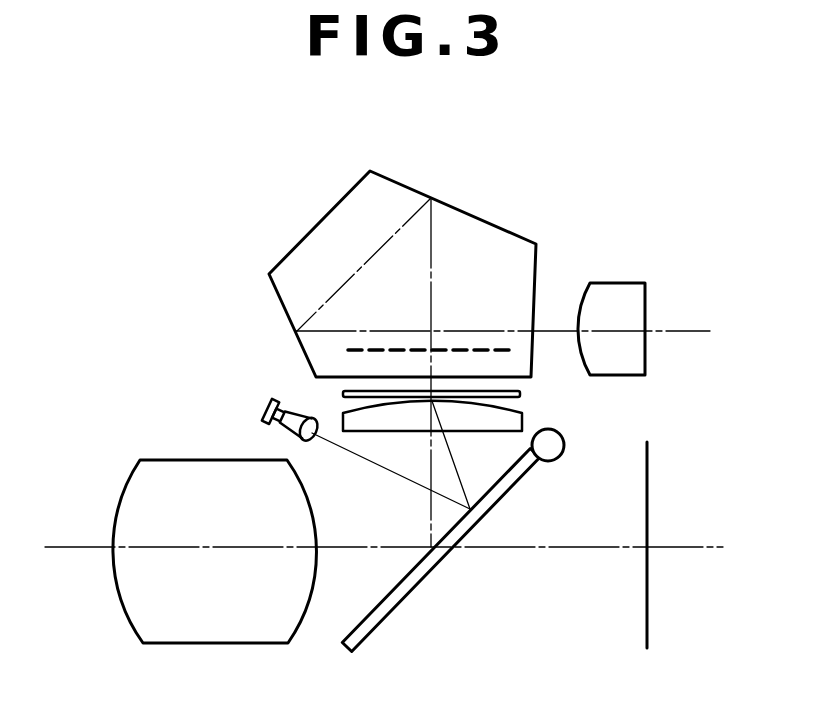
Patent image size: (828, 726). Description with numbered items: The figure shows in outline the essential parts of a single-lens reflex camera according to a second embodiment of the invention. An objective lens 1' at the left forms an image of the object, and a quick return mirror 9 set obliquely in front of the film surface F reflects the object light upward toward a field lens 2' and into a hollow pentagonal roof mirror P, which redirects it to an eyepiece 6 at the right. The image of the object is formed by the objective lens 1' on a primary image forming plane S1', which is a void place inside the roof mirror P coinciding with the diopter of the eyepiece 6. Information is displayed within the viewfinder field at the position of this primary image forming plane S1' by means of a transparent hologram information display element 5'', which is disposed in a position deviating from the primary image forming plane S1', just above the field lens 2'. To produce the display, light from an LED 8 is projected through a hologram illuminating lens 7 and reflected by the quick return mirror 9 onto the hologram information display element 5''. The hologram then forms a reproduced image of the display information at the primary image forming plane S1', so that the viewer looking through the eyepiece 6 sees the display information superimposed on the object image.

The hollow pentagonal roof mirror P is at (408, 184).
The primary image forming plane S1' is at (460, 271).
The hologram information display element 5'' is at (461, 368).
The field lens 2' is at (479, 409).
The eyepiece 6 is at (645, 283).
The objective lens 1' is at (215, 502).
The LED 8 is at (268, 404).
The hologram illuminating lens 7 is at (308, 412).
The quick return mirror 9 is at (565, 453).
The film surface F is at (648, 598).